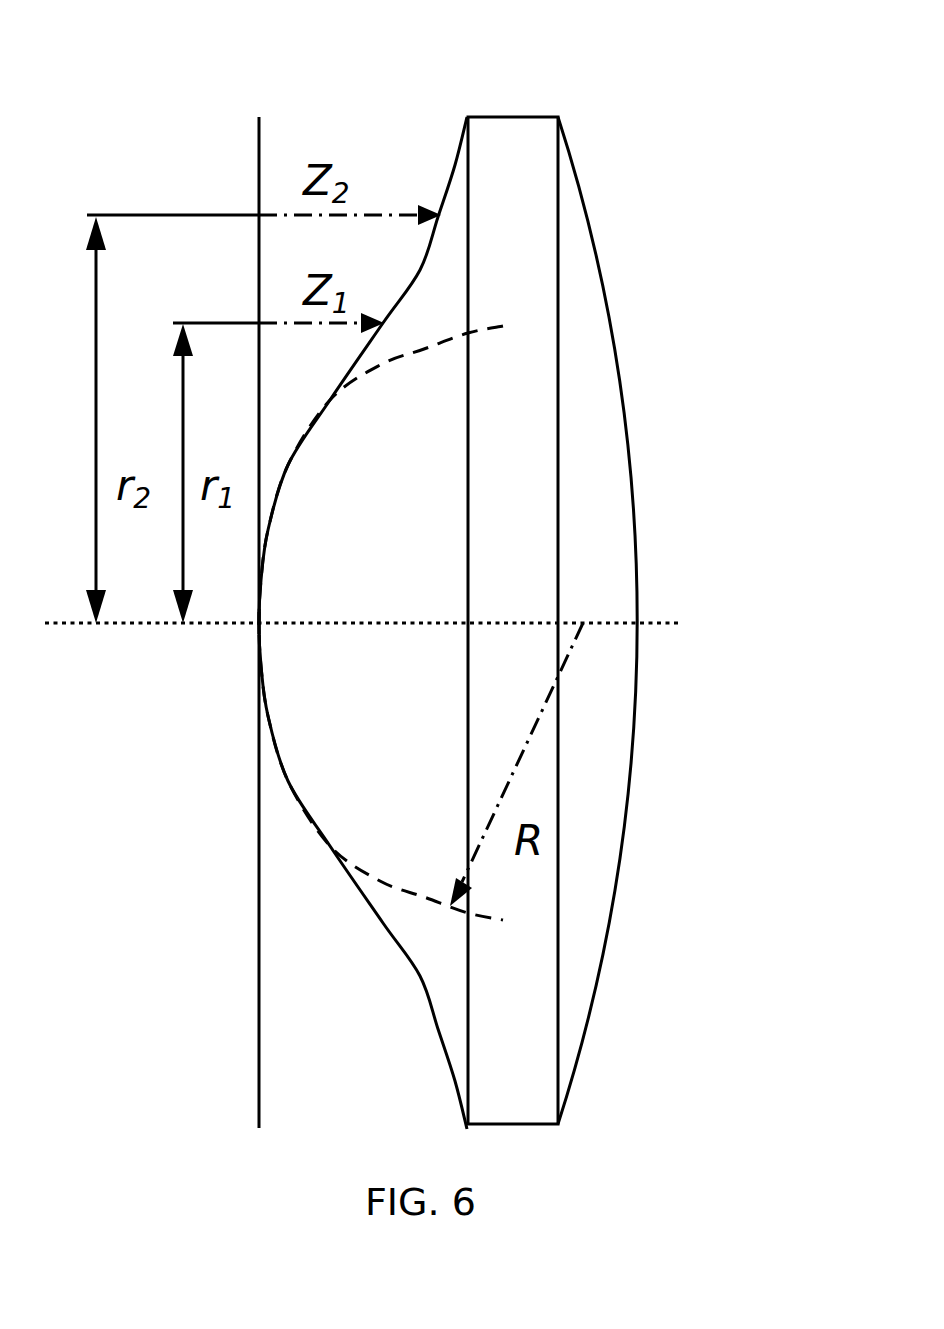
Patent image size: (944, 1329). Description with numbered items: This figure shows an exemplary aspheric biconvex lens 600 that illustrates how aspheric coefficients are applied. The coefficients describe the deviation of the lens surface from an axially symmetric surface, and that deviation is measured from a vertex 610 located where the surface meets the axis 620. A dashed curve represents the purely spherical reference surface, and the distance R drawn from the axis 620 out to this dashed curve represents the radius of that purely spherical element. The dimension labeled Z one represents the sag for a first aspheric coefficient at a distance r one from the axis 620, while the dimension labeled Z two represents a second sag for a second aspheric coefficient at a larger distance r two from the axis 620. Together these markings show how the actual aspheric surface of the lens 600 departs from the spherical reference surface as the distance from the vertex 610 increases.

The aspheric biconvex lens 600 is at (364, 56).
The vertex 610 is at (240, 638).
The axis 620 is at (663, 622).